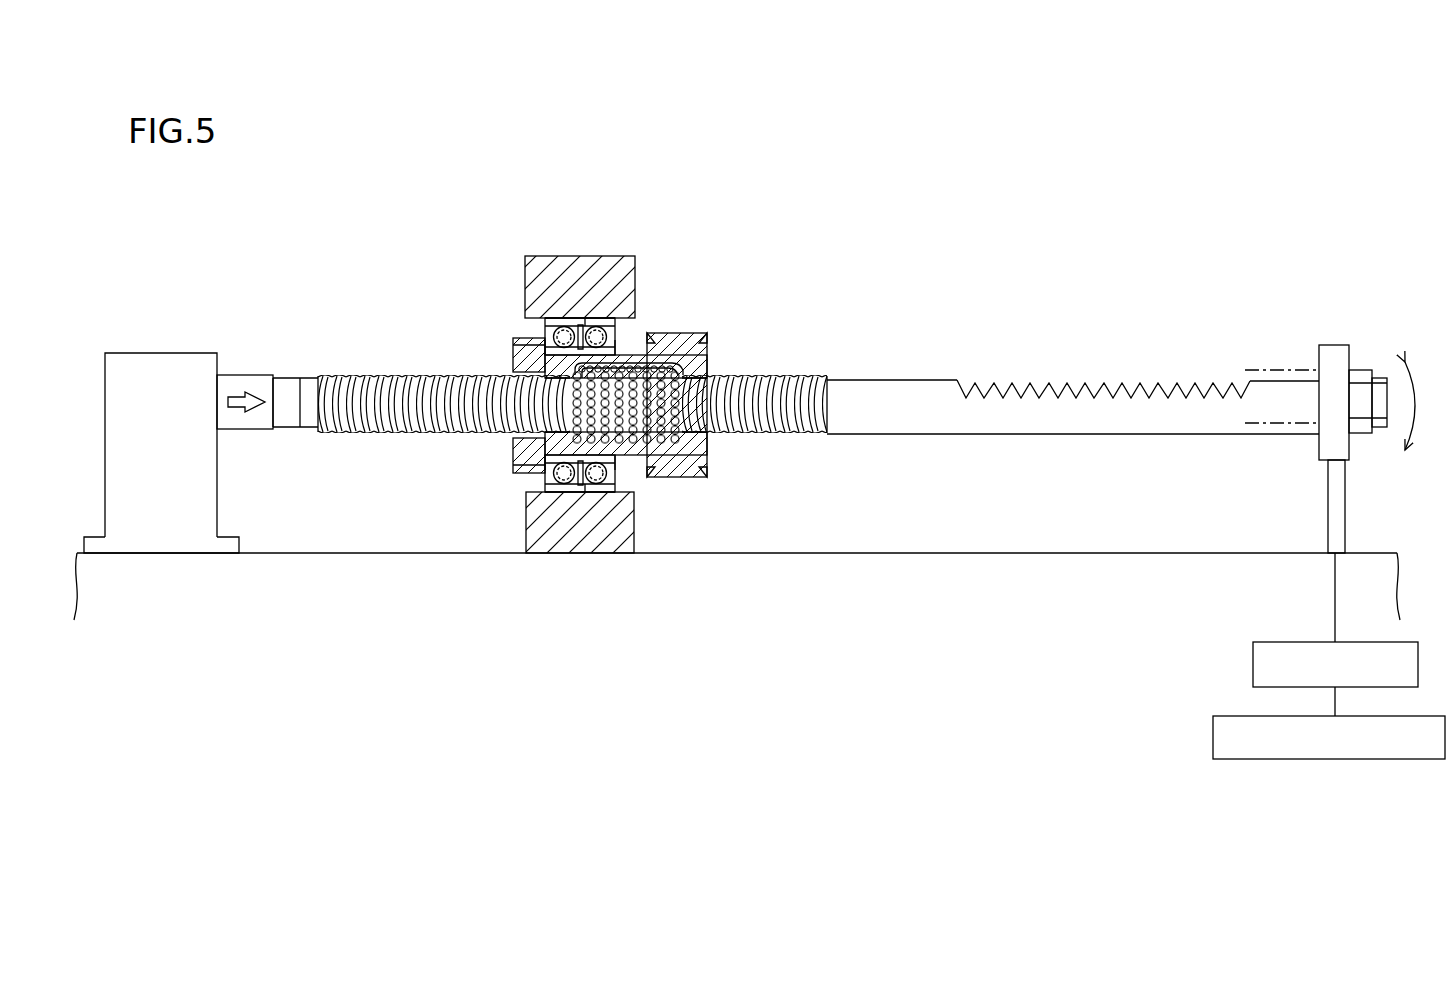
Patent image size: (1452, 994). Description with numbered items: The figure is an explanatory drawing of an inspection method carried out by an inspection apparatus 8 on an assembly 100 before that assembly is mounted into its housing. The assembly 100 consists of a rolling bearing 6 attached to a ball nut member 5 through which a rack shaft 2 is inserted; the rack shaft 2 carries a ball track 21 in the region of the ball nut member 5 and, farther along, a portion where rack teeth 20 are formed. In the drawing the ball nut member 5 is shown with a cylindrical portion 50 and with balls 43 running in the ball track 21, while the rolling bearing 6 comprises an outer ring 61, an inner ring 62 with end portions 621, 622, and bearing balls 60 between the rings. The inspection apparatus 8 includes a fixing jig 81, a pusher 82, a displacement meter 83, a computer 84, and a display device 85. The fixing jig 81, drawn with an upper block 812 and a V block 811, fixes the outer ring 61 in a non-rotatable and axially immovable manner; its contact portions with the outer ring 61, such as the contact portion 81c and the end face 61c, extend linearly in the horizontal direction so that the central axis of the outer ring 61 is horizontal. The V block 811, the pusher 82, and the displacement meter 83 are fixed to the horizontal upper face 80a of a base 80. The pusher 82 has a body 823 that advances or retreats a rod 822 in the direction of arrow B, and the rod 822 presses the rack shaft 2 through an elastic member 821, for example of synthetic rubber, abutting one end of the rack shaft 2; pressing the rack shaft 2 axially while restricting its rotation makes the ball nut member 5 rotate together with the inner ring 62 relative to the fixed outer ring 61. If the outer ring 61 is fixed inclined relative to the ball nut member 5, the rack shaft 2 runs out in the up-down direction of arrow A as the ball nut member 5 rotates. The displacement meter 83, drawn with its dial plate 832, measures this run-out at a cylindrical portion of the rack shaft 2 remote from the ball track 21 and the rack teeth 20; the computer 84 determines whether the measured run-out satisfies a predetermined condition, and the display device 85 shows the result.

The inspection apparatus 8 is at (197, 231).
The pusher 82 is at (141, 325).
The body 823 is at (204, 352).
The rod 822 is at (264, 375).
The elastic member 821 is at (297, 378).
The arrow B is at (235, 412).
The rack shaft 2 is at (879, 379).
The ball track 21 is at (440, 377).
The rack teeth 20 is at (1044, 386).
The assembly 100 is at (702, 320).
The ball nut member 5 is at (707, 347).
The nut cylindrical portion 50 is at (513, 350).
The balls 43 is at (676, 415).
The rolling bearing 6 is at (538, 333).
The outer ring 61 is at (628, 333).
The inner ring 62 is at (617, 345).
The inner ring end 621 is at (545, 468).
The inner ring end 622 is at (619, 468).
The bearing balls 60 is at (588, 484).
The contact portion 61c is at (598, 494).
The fixing jig 81 is at (600, 252).
The upper support block 812 is at (525, 272).
The V block 811 is at (527, 540).
The contact portion 81c is at (574, 320).
The displacement meter 83 is at (1342, 314).
The dial plate 832 is at (1350, 353).
The arrow A is at (1420, 390).
The base 80 is at (1083, 565).
The upper face 80a is at (980, 552).
The computer 84 is at (1262, 642).
The display device 85 is at (1262, 716).